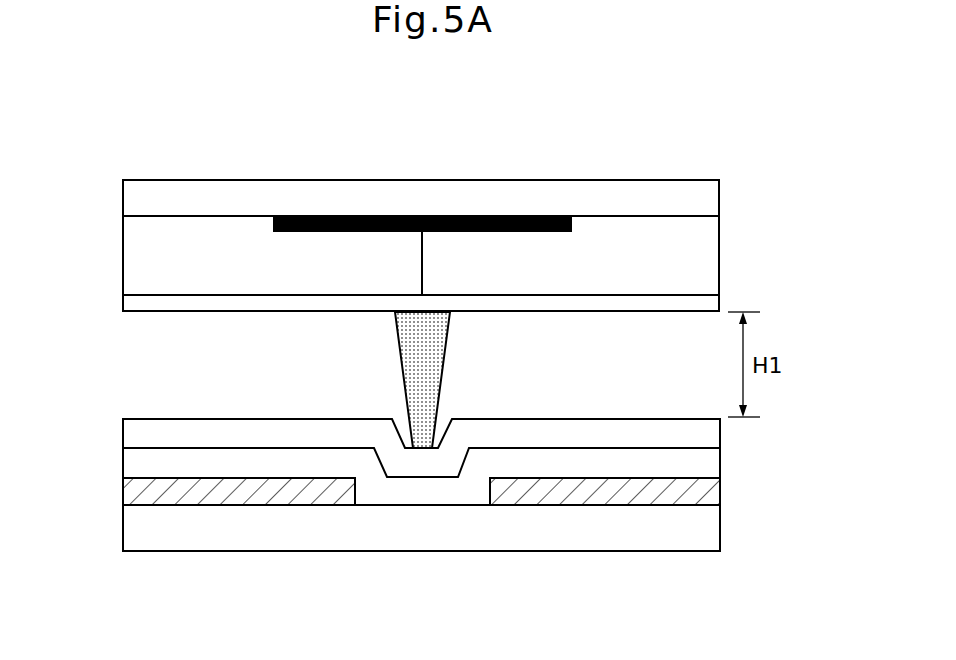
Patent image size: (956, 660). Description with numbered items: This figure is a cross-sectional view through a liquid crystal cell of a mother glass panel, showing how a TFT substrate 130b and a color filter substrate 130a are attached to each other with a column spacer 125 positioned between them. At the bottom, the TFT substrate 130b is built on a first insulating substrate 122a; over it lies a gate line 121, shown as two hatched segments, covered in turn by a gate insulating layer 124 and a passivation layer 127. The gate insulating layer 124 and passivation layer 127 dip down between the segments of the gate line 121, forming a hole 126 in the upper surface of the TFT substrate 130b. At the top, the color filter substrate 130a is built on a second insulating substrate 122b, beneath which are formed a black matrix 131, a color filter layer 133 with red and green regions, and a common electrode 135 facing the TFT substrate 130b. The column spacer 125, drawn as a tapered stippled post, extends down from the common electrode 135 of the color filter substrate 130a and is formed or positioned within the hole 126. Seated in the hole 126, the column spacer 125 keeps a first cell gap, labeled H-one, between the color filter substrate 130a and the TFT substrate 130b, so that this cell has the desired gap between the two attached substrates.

The color filter substrate 130a is at (426, 212).
The TFT substrate 130b is at (426, 528).
The second insulating substrate 122b is at (720, 197).
The first insulating substrate 122a is at (720, 525).
The black matrix 131 is at (453, 215).
The color filter layer 133 is at (720, 267).
The common electrode 135 is at (720, 298).
The column spacer 125 is at (432, 390).
The passivation layer 127 is at (720, 432).
The gate insulating layer 124 is at (720, 460).
The gate line 121 is at (720, 488).
The hole 126 is at (400, 492).